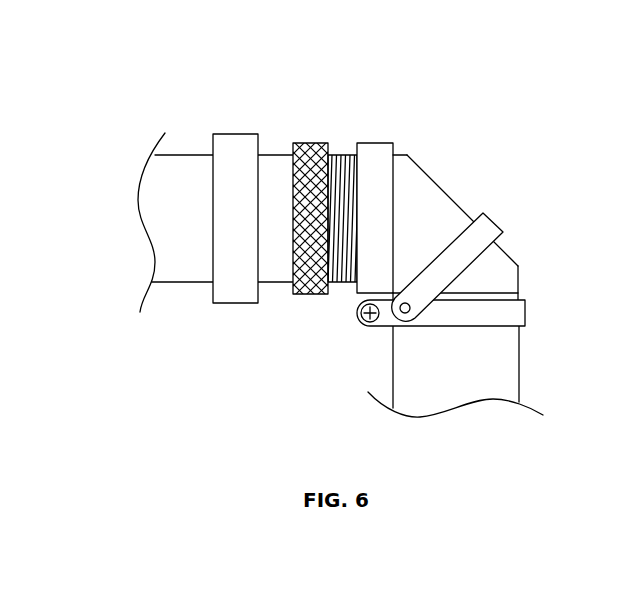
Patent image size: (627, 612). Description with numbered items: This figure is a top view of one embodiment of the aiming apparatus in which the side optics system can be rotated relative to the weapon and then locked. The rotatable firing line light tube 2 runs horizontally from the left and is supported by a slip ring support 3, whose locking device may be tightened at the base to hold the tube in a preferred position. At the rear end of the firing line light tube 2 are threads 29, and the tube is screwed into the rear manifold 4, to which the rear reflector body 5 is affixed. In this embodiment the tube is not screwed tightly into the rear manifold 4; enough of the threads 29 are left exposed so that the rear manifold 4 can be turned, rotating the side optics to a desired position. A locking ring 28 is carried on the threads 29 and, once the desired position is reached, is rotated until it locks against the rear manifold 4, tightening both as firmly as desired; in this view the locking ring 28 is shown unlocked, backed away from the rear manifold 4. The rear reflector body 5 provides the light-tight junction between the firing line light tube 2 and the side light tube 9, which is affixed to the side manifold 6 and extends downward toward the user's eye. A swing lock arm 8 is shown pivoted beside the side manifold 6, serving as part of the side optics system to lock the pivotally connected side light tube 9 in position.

The firing line light tube 2 is at (190, 156).
The slip ring supports 3 is at (235, 132).
The locking ring 28 is at (312, 141).
The threads 29 is at (343, 151).
The rear manifold 4 is at (381, 142).
The rear reflector body 5 is at (433, 183).
The swing lock arm 8 is at (489, 219).
The side manifold 6 is at (528, 307).
The side light tube 9 is at (404, 356).